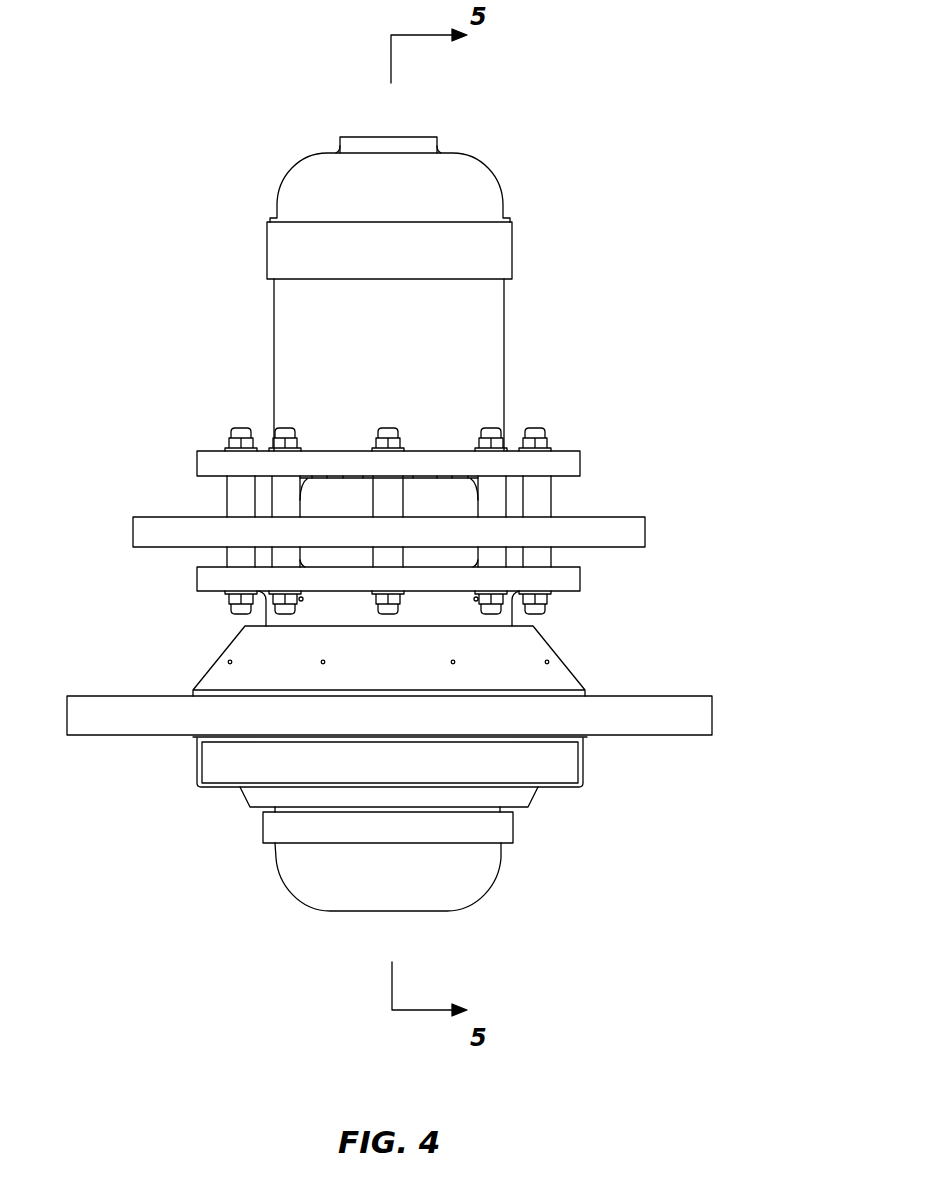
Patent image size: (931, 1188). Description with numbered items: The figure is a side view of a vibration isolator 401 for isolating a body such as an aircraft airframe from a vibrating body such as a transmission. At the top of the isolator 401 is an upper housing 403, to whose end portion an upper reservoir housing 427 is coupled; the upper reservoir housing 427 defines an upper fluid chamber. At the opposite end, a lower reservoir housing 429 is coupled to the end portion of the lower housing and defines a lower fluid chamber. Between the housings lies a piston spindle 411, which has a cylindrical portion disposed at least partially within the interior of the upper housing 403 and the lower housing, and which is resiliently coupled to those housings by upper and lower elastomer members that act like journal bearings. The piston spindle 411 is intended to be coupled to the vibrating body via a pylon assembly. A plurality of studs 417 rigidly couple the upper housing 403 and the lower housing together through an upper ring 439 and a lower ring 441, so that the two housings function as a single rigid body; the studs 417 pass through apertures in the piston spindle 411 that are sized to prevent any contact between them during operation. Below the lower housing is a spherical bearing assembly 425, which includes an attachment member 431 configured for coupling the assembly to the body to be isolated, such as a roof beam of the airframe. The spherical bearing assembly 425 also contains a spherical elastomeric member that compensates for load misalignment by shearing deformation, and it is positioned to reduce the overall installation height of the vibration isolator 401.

The vibration isolator 401 is at (584, 129).
The upper housing 403 is at (504, 335).
The upper reservoir housing 427 is at (292, 173).
The upper ring 439 is at (580, 460).
The studs 417 is at (552, 498).
The piston spindle 411 is at (645, 531).
The lower ring 441 is at (580, 578).
The spherical bearing assembly 425 is at (148, 769).
The attachment member 431 is at (675, 735).
The lower reservoir housing 429 is at (495, 888).